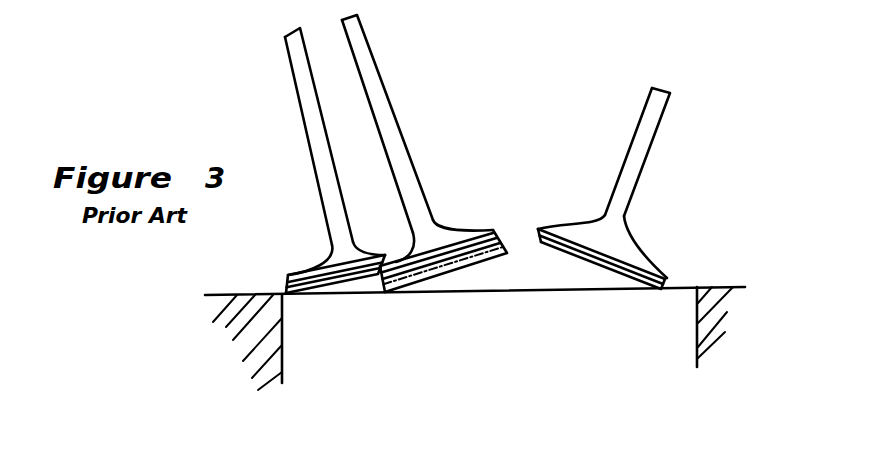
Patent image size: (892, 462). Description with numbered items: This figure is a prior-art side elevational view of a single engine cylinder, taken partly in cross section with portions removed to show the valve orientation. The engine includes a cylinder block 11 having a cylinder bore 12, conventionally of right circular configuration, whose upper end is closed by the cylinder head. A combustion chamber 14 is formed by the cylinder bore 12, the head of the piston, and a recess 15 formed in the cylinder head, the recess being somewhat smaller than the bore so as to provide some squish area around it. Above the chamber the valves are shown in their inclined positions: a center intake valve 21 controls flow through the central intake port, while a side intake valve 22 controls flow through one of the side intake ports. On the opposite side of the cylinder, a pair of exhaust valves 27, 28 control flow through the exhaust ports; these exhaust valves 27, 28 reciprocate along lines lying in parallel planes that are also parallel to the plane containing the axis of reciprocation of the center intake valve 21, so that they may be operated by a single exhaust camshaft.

The cylinder block 11 is at (741, 309).
The cylinder bore 12 is at (692, 318).
The combustion chamber 14 is at (533, 277).
The recess 15 is at (514, 240).
The center intake valve 21 is at (310, 151).
The side intake valve 22 is at (396, 115).
The exhaust valve 27 is at (645, 188).
The exhaust valve 28 is at (602, 252).